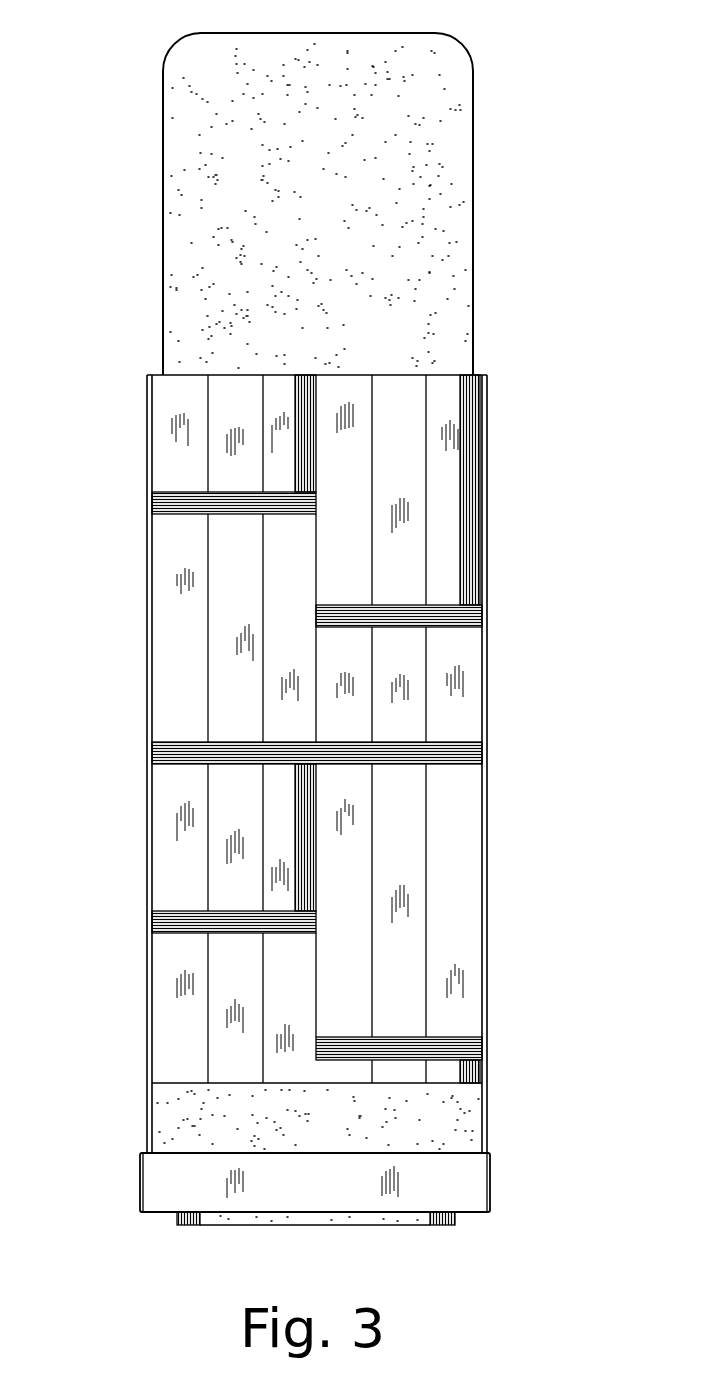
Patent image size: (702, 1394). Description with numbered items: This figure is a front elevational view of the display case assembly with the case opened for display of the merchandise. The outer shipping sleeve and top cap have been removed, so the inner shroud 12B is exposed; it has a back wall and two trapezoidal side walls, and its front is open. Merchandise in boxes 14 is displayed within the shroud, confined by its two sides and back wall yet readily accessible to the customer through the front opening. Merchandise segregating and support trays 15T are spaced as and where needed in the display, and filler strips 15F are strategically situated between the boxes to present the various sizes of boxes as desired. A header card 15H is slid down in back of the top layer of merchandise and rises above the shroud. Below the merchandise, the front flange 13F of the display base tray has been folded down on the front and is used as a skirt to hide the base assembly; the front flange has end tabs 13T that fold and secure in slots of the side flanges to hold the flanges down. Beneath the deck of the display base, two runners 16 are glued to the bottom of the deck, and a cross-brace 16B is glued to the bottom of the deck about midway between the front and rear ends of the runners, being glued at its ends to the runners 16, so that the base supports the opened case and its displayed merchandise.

The inner shroud 12B is at (150, 920).
The front flange 13F is at (163, 1197).
The end tabs 13T is at (140, 1180).
The boxes 14 is at (403, 472).
The filler strips 15F is at (305, 410).
The header card 15H is at (415, 212).
The merchandise segregating and support trays 15T is at (178, 504).
The runners 16 is at (185, 1225).
The cross-brace 16B is at (307, 1225).